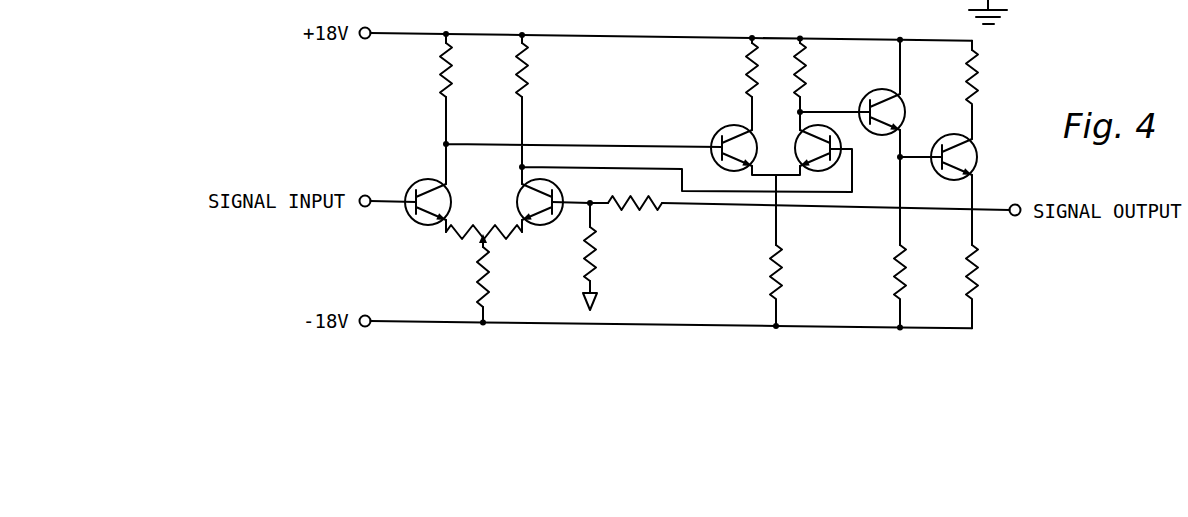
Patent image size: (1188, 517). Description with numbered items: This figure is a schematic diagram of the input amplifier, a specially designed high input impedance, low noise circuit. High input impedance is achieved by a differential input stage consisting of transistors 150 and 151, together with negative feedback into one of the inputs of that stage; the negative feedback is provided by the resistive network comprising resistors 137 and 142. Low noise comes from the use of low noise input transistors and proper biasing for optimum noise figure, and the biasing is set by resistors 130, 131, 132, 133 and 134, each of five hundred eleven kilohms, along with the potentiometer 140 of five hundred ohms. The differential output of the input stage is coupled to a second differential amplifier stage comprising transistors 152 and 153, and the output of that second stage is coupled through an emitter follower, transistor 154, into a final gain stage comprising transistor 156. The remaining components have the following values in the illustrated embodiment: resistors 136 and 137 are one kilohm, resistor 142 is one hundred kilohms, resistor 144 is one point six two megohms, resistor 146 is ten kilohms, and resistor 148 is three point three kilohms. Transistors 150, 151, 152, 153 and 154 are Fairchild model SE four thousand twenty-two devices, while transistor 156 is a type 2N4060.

The resistor 130 is at (446, 69).
The resistor 131 is at (522, 80).
The resistor 132 is at (746, 83).
The resistor 133 is at (803, 84).
The resistor 134 is at (490, 280).
The resistor 136 is at (975, 62).
The resistor 137 is at (595, 252).
The potentiometer 140 is at (487, 226).
The resistor 142 is at (650, 206).
The resistor 144 is at (782, 270).
The resistor 146 is at (905, 270).
The resistor 148 is at (978, 275).
The transistor 150 is at (420, 183).
The transistor 151 is at (557, 190).
The transistor 152 is at (731, 127).
The transistor 153 is at (838, 142).
The transistor 154 is at (868, 96).
The transistor 156 is at (977, 158).